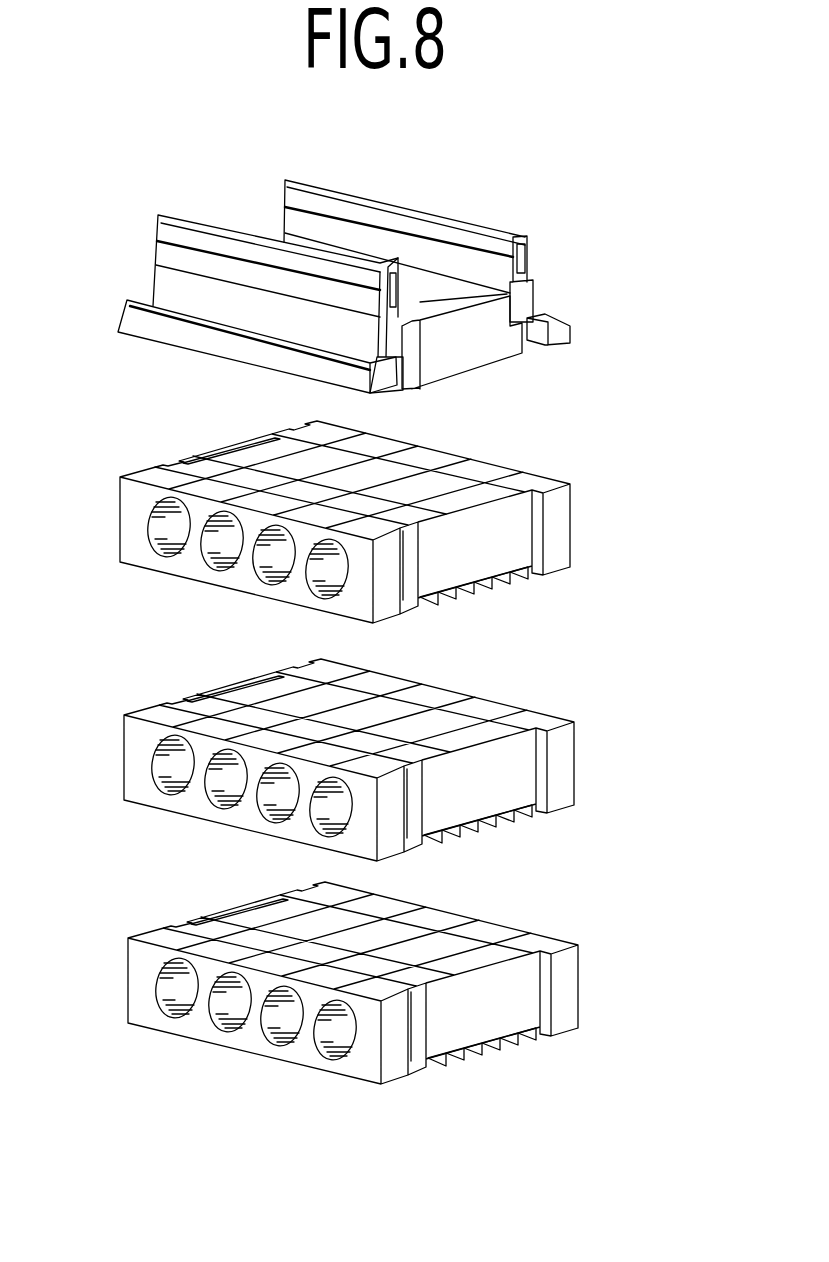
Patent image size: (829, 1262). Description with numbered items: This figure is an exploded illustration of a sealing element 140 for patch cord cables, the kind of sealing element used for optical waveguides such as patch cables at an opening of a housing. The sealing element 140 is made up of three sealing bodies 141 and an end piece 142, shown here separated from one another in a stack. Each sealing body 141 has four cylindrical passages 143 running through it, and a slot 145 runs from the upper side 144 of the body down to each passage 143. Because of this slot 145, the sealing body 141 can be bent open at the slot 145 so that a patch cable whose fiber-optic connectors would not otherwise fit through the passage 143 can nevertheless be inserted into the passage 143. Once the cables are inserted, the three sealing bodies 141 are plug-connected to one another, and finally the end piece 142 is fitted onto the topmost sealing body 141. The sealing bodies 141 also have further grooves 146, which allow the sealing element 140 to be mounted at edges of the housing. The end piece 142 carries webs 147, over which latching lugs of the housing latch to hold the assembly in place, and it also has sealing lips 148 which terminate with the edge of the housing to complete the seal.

The sealing element 140 is at (628, 256).
The sealing body 141 is at (490, 548).
The end piece 142 is at (387, 243).
The cylindrical passage 143 is at (158, 528).
The upper side 144 is at (253, 482).
The slot 145 is at (278, 456).
The groove 146 is at (547, 1003).
The web 147 is at (472, 332).
The sealing lip 148 is at (173, 256).